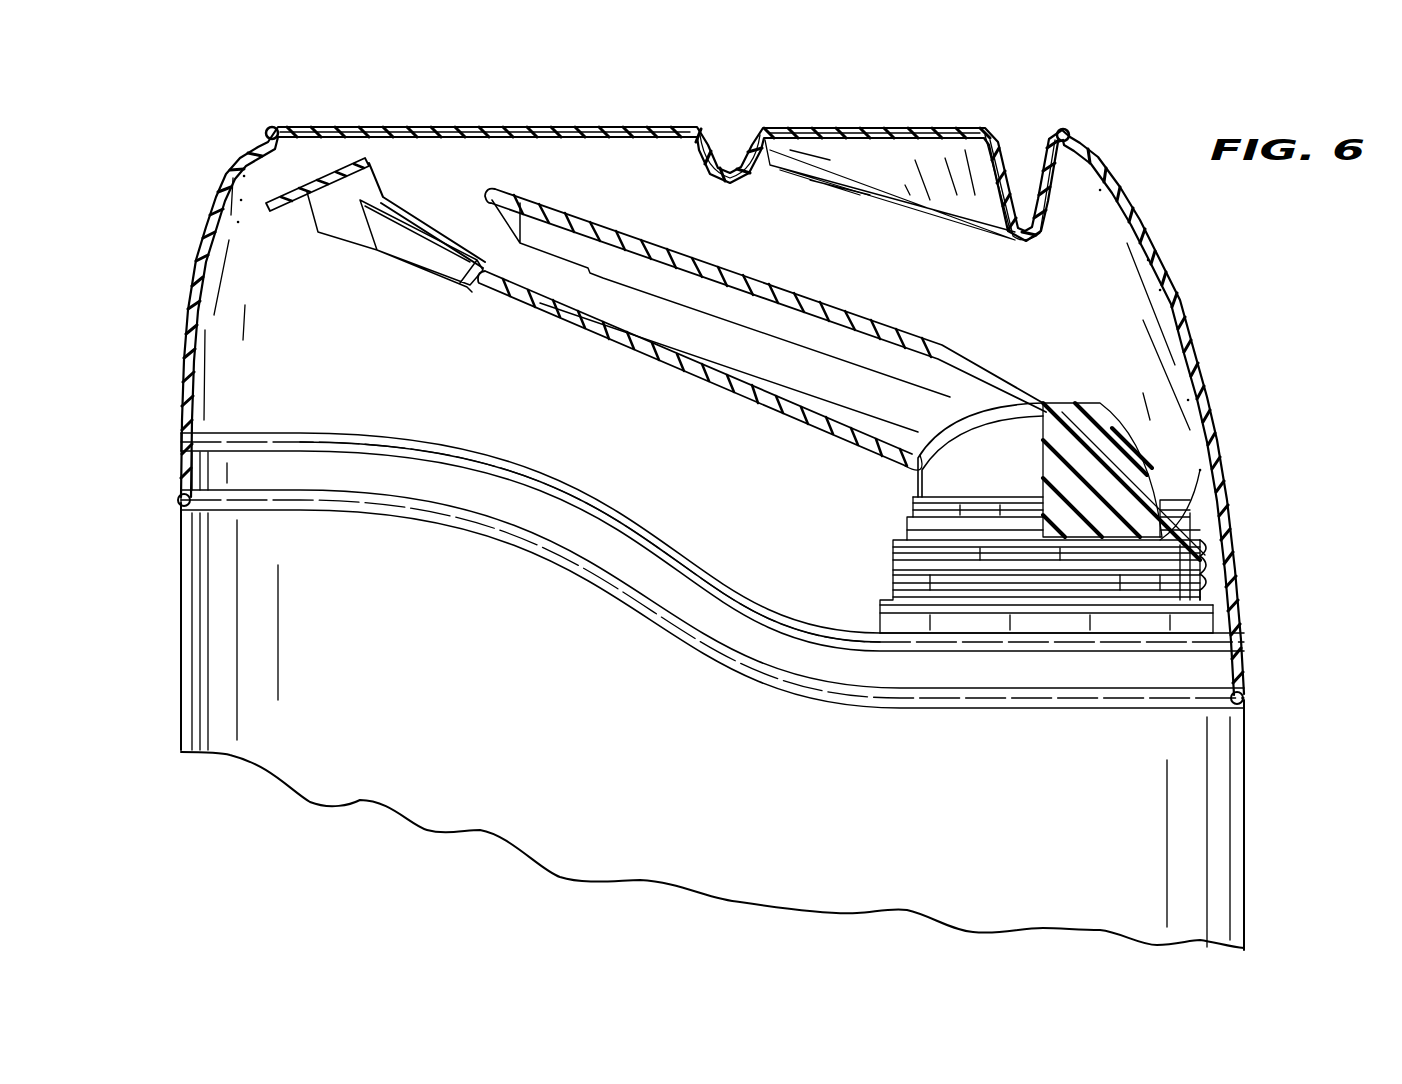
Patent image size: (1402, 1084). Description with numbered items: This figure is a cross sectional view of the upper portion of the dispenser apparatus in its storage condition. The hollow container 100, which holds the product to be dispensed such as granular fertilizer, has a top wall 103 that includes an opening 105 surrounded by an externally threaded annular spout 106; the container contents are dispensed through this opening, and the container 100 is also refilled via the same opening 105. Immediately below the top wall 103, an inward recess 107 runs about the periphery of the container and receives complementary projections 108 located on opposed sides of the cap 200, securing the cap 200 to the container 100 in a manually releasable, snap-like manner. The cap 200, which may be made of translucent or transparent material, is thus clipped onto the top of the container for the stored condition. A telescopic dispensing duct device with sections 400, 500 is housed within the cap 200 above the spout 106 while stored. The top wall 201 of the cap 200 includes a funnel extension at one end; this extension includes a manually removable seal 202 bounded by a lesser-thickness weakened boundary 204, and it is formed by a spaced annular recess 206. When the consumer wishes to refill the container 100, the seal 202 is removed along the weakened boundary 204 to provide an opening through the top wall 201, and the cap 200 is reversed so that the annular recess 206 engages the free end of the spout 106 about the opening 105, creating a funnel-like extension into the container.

The hollow container 100 is at (1245, 840).
The top wall 103 is at (637, 600).
The opening 105 is at (1010, 618).
The externally threaded annular spout 106 is at (1213, 575).
The inward recess 107 is at (205, 508).
The complementary projections 108 is at (177, 500).
The cap 200 is at (1208, 396).
The top wall of the cap 201 is at (590, 127).
The manually removable seal 202 is at (878, 132).
The weakened boundary 204 is at (970, 128).
The annular recess 206 is at (730, 170).
The telescopic dispensing duct device section 400 is at (1045, 400).
The telescopic dispensing duct device section 500 is at (790, 420).